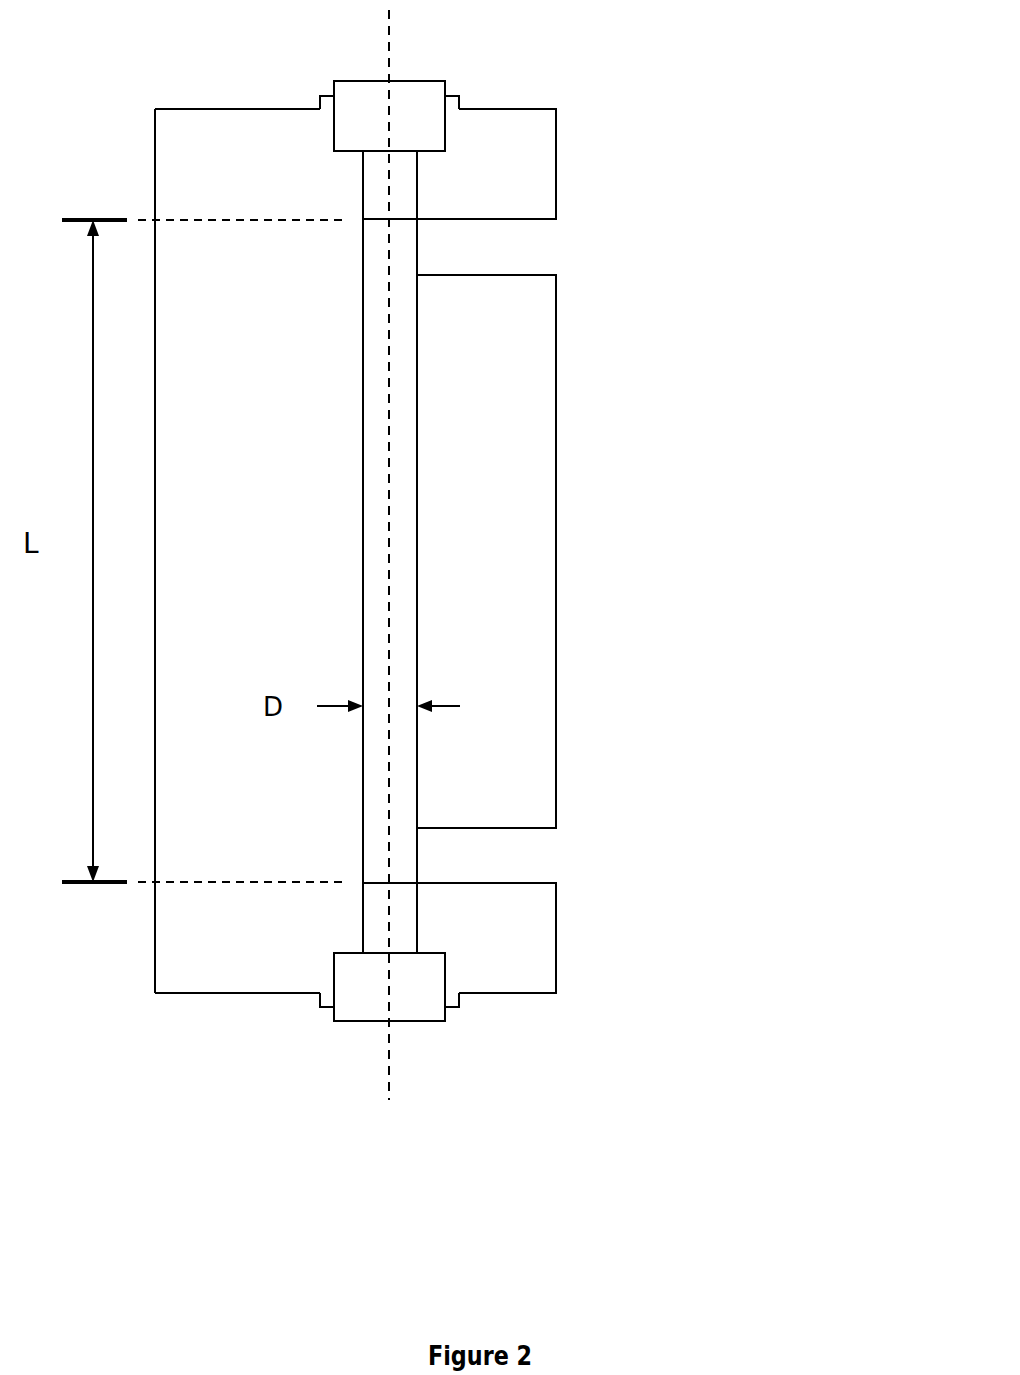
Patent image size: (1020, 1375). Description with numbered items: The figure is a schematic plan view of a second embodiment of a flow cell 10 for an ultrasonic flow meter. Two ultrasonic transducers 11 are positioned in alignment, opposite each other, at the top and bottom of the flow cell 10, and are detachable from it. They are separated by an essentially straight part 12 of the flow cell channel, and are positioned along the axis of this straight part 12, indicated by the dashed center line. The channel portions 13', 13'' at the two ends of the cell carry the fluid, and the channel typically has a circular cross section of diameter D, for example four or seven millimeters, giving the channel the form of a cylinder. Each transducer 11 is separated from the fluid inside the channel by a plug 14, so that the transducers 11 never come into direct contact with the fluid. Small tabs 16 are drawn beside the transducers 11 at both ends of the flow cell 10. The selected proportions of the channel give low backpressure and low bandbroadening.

The flow cell 10 is at (473, 592).
The ultrasonic transducers 11 is at (417, 97).
The essentially straight part 12 is at (408, 495).
The flow cell channel 13' is at (643, 826).
The flow cell channel 13'' is at (643, 211).
The plug 14 is at (408, 192).
The tab 16 is at (327, 100).